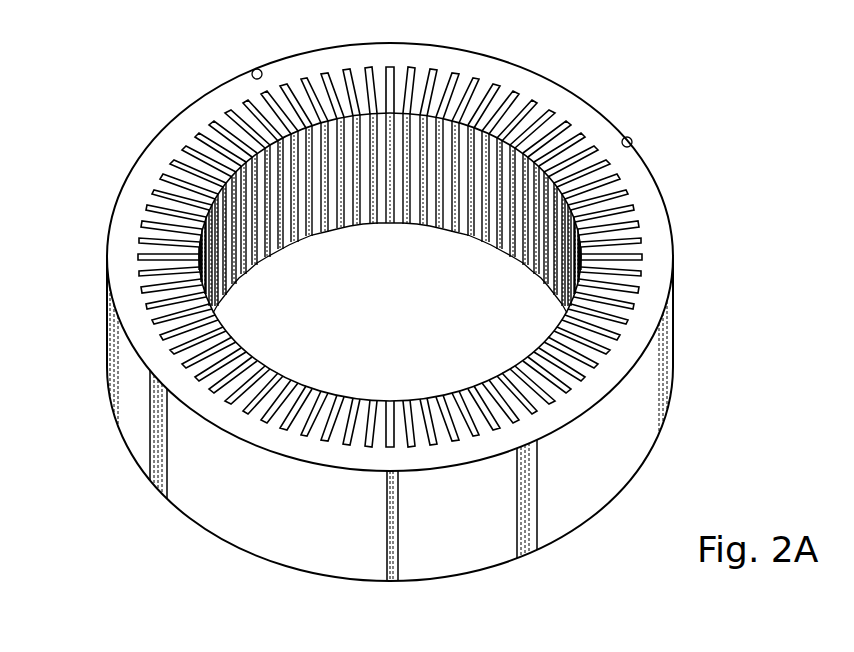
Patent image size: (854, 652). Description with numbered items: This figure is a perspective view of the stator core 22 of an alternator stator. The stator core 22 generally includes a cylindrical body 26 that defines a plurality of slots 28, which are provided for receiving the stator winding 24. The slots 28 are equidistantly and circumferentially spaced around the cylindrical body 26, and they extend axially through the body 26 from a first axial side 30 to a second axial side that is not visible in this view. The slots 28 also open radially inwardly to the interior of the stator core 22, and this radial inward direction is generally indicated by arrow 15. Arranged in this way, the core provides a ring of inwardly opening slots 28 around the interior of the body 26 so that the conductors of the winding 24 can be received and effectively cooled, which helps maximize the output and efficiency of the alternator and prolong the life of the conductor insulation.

The radial inward direction arrow 15 is at (381, 326).
The stator core 22 is at (168, 92).
The stator winding 24 is at (582, 3).
The cylindrical body 26 is at (552, 543).
The slots 28 is at (147, 207).
The first axial side 30 is at (150, 352).